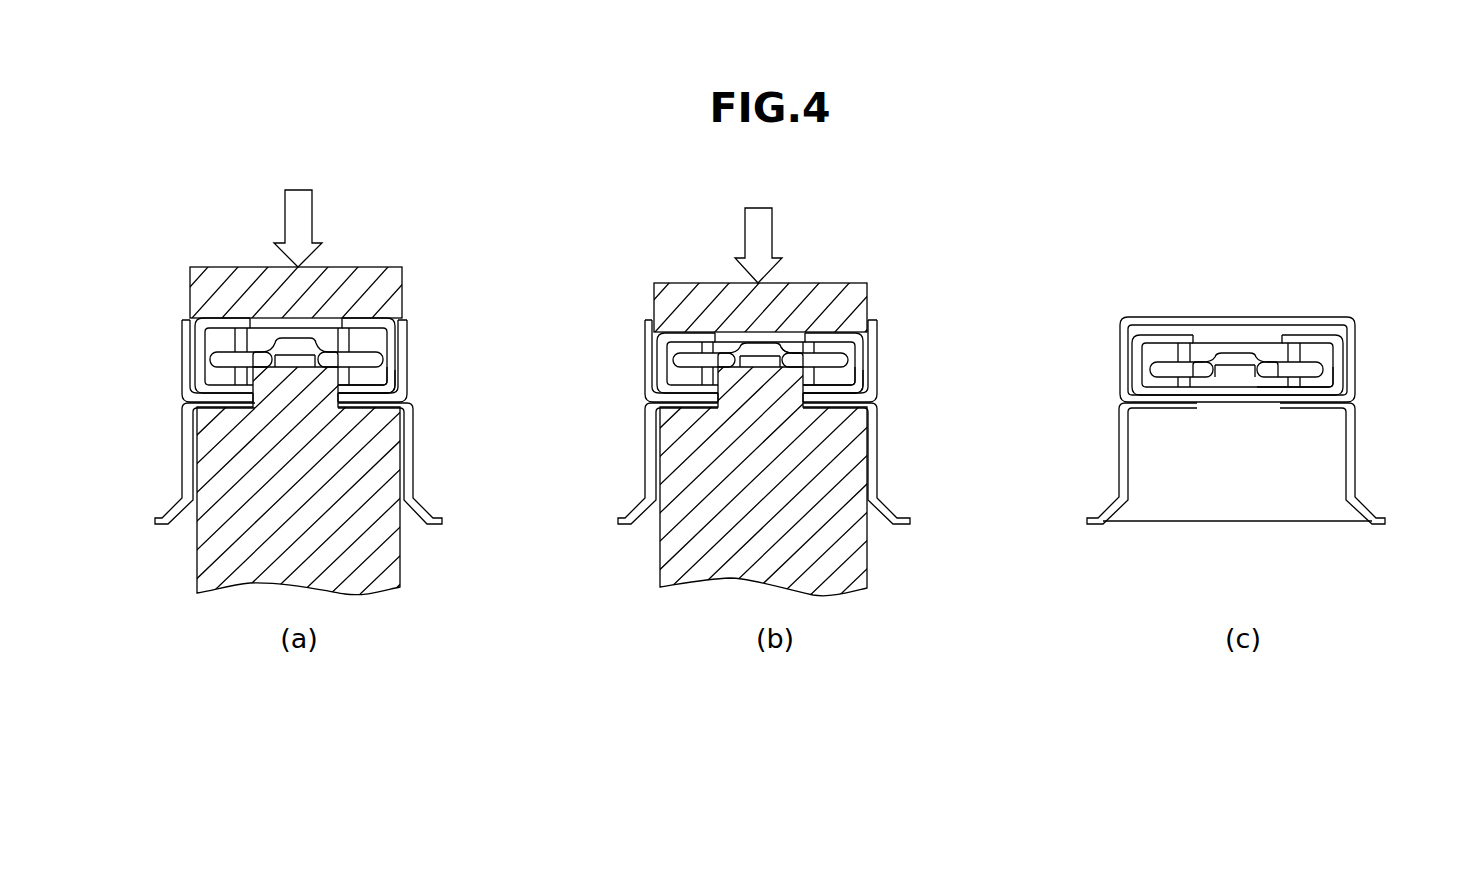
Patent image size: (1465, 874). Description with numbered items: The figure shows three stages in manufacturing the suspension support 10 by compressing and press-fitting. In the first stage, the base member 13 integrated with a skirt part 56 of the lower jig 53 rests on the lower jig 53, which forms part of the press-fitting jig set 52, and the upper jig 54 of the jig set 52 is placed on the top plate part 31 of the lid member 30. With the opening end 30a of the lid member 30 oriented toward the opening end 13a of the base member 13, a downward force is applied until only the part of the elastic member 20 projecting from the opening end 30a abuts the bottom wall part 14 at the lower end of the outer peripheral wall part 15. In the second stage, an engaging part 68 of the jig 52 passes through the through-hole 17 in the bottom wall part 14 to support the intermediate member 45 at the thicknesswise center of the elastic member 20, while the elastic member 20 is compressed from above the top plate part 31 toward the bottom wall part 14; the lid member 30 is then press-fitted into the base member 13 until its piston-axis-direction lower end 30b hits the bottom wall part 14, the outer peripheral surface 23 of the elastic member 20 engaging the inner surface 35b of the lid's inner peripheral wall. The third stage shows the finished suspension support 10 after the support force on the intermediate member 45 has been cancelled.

The suspension support 10 is at (1364, 306).
The base member 13 is at (779, 318).
The opening end of the base member 13a is at (186, 317).
The bottom wall part 14 is at (374, 381).
The outer peripheral wall part 15 is at (874, 389).
The through-hole 17 is at (791, 403).
The elastic member 20 is at (403, 394).
The outer peripheral surface of the elastic member 23 is at (861, 352).
The lid member 30 is at (414, 339).
The opening end of the lid member 30a is at (377, 382).
The piston-axis-direction lower end of the lid member 30b is at (660, 382).
The top plate part 31 is at (236, 321).
The inner surface of the inner peripheral wall part 35b is at (829, 338).
The intermediate member 45 is at (787, 346).
The press-fitting jig set 52 is at (585, 309).
The lower jig 53 is at (393, 548).
The upper jig 54 is at (381, 296).
The skirt part 56 is at (443, 520).
The engaging part 68 is at (835, 352).